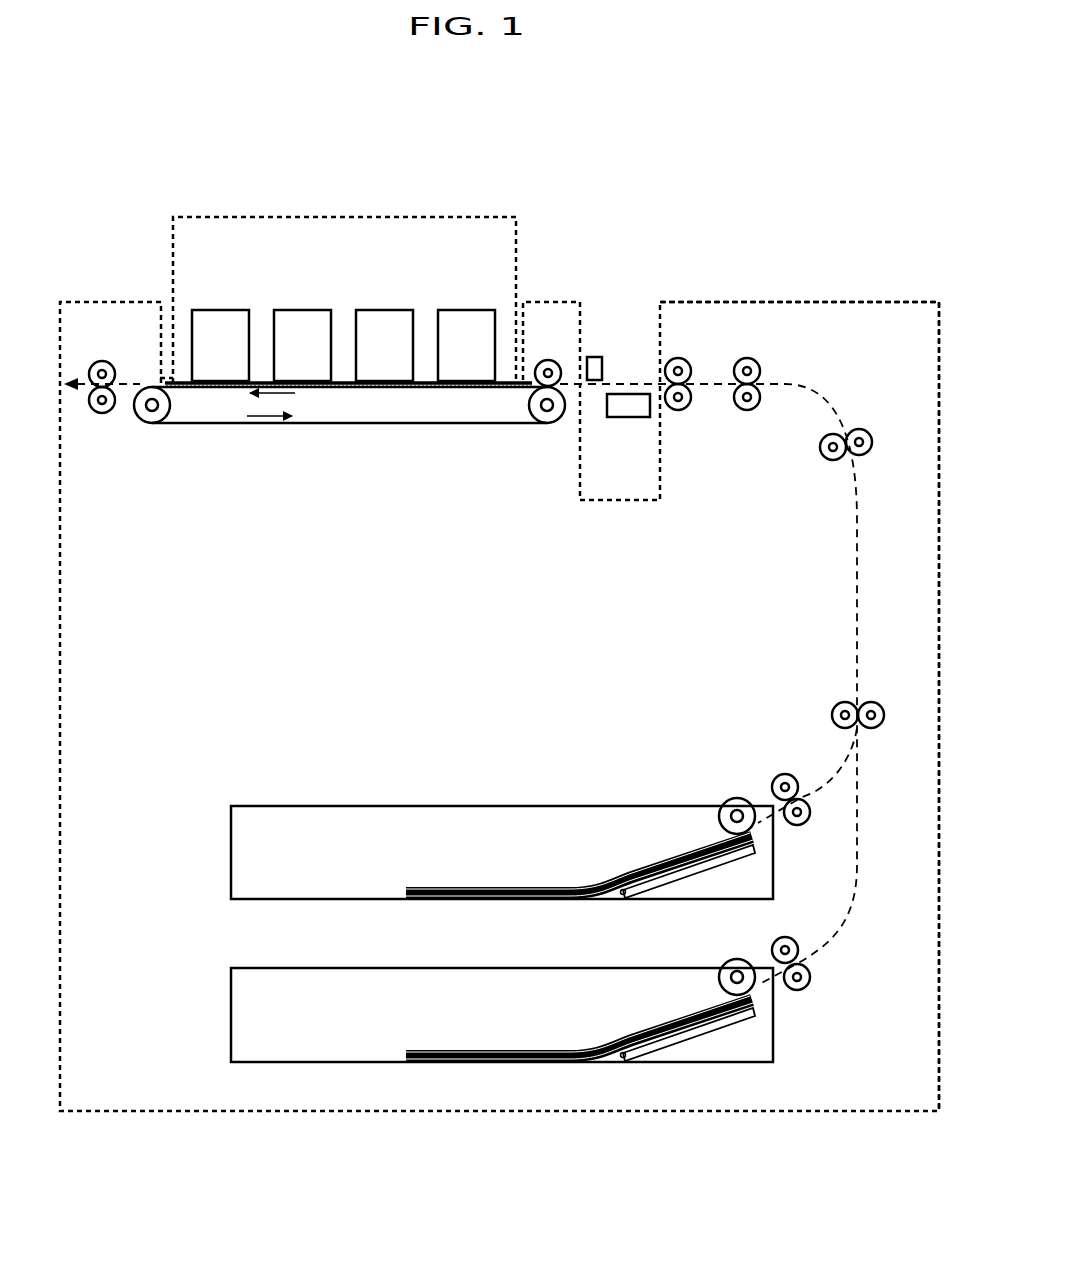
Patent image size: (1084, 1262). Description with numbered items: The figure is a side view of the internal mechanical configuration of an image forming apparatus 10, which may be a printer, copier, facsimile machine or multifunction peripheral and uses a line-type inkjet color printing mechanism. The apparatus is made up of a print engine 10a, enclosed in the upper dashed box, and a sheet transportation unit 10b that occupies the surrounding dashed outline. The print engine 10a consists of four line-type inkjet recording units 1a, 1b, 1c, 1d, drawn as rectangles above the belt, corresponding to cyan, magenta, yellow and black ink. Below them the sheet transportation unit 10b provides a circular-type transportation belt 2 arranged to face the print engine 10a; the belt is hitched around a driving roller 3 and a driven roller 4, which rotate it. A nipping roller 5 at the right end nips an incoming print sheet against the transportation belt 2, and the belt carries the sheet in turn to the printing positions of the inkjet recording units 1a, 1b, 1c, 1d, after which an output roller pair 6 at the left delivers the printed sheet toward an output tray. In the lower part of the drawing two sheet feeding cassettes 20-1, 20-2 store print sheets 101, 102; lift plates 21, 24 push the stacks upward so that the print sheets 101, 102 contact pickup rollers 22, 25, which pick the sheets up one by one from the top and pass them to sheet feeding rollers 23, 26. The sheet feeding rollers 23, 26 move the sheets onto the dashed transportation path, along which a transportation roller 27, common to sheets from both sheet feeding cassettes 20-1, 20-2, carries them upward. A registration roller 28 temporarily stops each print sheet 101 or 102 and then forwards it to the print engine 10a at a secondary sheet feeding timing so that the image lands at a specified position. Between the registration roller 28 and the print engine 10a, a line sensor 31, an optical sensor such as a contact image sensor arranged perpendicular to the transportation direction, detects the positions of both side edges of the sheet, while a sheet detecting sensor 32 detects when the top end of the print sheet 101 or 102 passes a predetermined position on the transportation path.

The image forming apparatus 10 is at (745, 121).
The print engine 10a is at (478, 215).
The sheet transportation unit 10b is at (897, 301).
The inkjet recording unit 1a is at (471, 310).
The inkjet recording unit 1b is at (391, 310).
The inkjet recording unit 1c is at (306, 310).
The inkjet recording unit 1d is at (228, 310).
The transportation belt 2 is at (382, 425).
The driving roller 3 is at (139, 419).
The driven roller 4 is at (553, 418).
The nipping roller 5 is at (556, 364).
The output roller pair 6 is at (99, 360).
The line sensor 31 is at (623, 418).
The sheet detecting sensor 32 is at (595, 356).
The transportation roller 27 is at (749, 358).
The registration roller 28 is at (679, 358).
The sheet feeding cassette 20-1 is at (231, 850).
The sheet feeding cassette 20-2 is at (231, 1012).
The print sheets 101 is at (428, 885).
The print sheets 102 is at (428, 1047).
The lift plate 21 is at (652, 887).
The pickup roller 22 is at (724, 803).
The sheet feeding roller 23 is at (773, 778).
The lift plate 24 is at (652, 1050).
The pickup roller 25 is at (730, 966).
The sheet feeding roller 26 is at (772, 945).